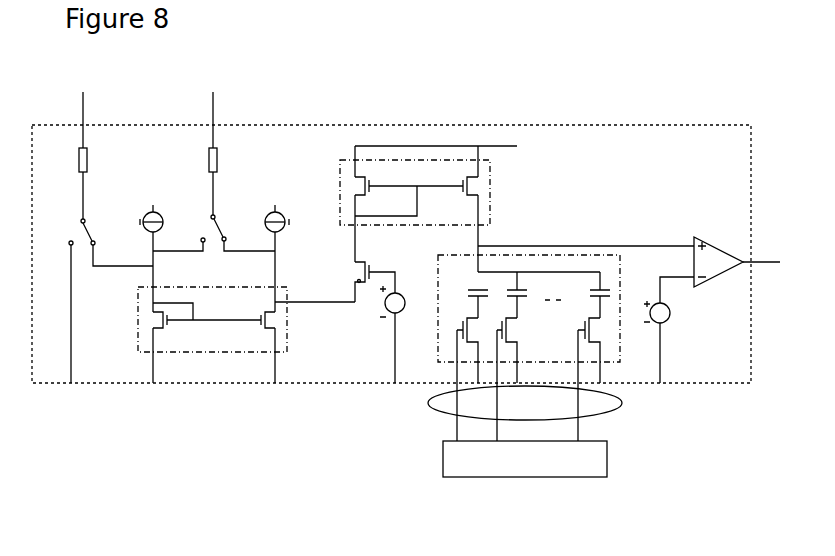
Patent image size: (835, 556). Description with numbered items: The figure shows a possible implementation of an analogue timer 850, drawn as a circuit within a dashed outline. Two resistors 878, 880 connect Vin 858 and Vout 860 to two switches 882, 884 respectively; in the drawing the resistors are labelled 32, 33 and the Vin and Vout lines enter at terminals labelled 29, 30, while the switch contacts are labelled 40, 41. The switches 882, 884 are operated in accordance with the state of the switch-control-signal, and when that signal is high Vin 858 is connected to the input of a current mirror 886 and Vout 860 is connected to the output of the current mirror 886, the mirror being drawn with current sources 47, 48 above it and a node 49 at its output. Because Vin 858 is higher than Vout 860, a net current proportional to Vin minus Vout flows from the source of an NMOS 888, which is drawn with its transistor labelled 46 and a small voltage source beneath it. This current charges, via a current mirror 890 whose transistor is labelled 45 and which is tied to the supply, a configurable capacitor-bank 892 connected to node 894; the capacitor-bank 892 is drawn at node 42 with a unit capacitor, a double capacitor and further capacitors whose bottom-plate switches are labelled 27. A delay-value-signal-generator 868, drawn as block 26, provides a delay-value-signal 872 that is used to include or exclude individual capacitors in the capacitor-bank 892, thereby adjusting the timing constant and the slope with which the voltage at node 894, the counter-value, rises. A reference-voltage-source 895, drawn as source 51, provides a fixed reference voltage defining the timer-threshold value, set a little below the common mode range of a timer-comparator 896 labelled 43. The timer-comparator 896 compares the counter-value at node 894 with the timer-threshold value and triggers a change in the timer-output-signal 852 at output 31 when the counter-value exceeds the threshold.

The analogue timer 850 is at (570, 124).
The Vin 858 is at (100, 76).
The Vout 860 is at (240, 76).
The resistor 878 is at (82, 172).
The resistor 880 is at (212, 172).
The switch 882 is at (99, 224).
The switch 884 is at (228, 213).
The current mirror 886 is at (203, 360).
The NMOS 888 is at (359, 296).
The current mirror 890 is at (410, 160).
The configurable capacitor-bank 892 is at (590, 255).
The node 894 is at (486, 242).
The timer-comparator 896 is at (731, 253).
The timer-output-signal 852 is at (758, 263).
The reference-voltage-source 895 is at (669, 318).
The delay-value-signal 872 is at (435, 405).
The delay-value-signal-generator 868 is at (607, 462).
The input node 29 is at (83, 118).
The output node 30 is at (213, 118).
The resistor 32 is at (87, 153).
The resistor 33 is at (217, 153).
The switch node 40 is at (81, 222).
The switch node 41 is at (215, 216).
The current source 47 is at (155, 207).
The current source 48 is at (277, 207).
The node 49 is at (287, 300).
The transistor 46 is at (355, 274).
The transistor 45 is at (490, 200).
The capacitor array node 42 is at (437, 262).
The comparator 43 is at (710, 243).
The output terminal 31 is at (765, 262).
The reference source 51 is at (669, 310).
The bottom plate 27 is at (457, 410).
The substrate block 26 is at (607, 448).